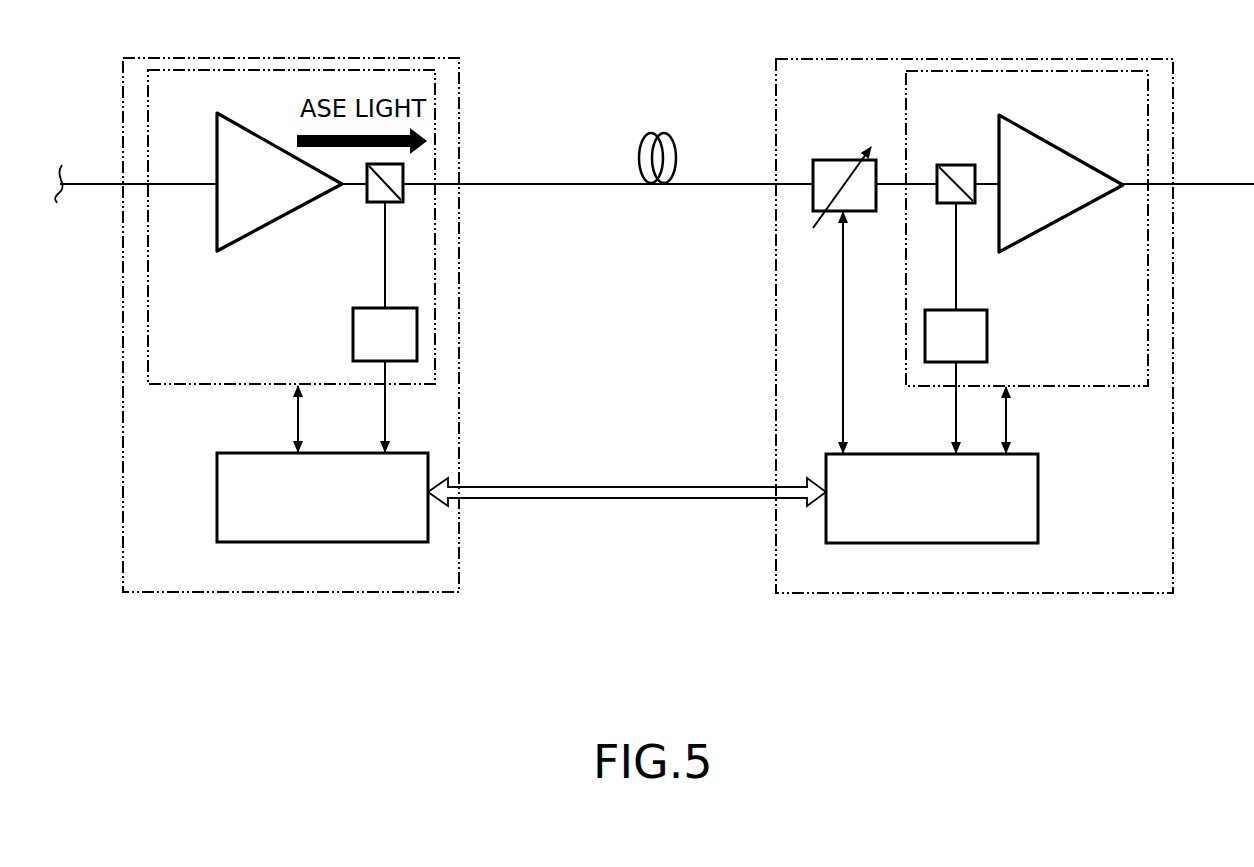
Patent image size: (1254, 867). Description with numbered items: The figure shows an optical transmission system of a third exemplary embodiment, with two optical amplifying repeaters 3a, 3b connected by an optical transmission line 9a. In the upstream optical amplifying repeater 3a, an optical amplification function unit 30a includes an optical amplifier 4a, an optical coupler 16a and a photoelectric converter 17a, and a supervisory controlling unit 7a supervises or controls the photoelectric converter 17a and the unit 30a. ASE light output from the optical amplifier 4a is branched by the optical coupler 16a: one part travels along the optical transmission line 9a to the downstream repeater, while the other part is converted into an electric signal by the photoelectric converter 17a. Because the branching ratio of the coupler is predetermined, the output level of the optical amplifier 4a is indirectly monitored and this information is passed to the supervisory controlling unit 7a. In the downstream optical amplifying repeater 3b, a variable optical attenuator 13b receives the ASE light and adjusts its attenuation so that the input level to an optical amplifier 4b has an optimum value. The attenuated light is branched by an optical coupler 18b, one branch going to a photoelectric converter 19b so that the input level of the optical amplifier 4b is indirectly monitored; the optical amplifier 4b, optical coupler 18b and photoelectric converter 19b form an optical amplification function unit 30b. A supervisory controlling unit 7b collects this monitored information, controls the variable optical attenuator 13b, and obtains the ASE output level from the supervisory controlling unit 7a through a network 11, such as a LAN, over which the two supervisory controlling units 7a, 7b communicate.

The optical amplifying repeater 3a is at (342, 57).
The optical amplifying repeater 3b is at (1080, 58).
The optical amplification function unit 30a is at (230, 385).
The optical amplification function unit 30b is at (1115, 388).
The optical amplifier 4a is at (217, 140).
The optical amplifier 4b is at (1055, 143).
The optical coupler 16a is at (370, 205).
The photoelectric converter 17a is at (353, 330).
The supervisory controlling unit 7a is at (217, 515).
The supervisory controlling unit 7b is at (900, 543).
The optical transmission line 9a is at (602, 185).
The network 11 is at (638, 498).
The variable optical attenuator 13b is at (825, 160).
The optical coupler 18b is at (957, 165).
The photoelectric converter 19b is at (987, 325).